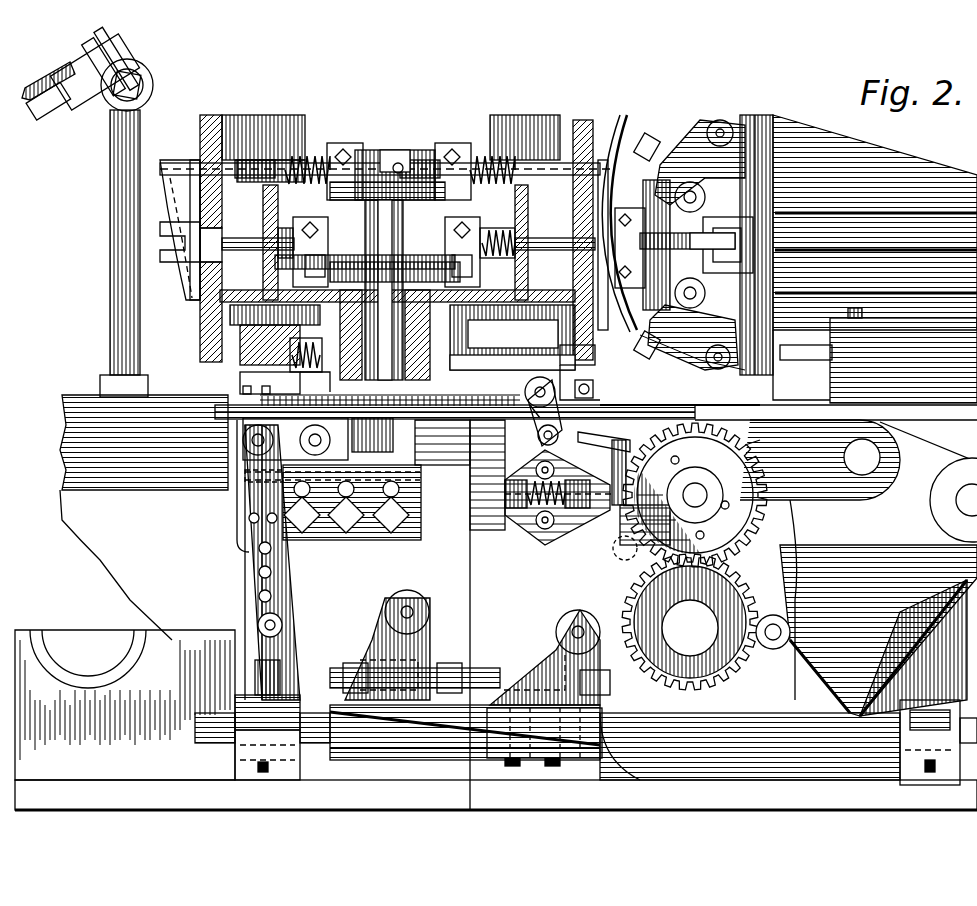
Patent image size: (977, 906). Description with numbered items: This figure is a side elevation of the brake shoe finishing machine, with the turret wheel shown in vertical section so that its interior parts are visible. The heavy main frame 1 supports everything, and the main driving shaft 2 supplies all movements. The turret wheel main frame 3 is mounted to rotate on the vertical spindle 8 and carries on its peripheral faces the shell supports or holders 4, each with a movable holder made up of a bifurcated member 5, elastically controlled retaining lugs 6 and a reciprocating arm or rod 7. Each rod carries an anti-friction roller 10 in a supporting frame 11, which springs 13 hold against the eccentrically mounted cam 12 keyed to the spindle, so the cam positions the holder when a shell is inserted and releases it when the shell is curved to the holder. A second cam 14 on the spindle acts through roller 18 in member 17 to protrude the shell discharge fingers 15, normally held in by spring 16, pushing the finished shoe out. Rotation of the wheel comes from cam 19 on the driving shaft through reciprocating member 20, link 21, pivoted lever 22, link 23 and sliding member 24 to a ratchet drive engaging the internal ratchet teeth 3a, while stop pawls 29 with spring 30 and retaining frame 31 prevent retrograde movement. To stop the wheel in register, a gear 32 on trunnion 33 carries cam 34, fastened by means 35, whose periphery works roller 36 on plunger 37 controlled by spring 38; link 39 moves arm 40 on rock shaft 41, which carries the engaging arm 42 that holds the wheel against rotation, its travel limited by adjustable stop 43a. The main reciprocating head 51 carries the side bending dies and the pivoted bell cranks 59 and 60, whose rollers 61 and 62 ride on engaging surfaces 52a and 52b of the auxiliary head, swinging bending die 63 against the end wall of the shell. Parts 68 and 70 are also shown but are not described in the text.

The main frame 1 is at (115, 470).
The main driving shaft 2 is at (703, 623).
The turret wheel main frame 3 is at (215, 115).
The internal ratchet teeth 3a is at (512, 337).
The shell support or holder 4 is at (190, 298).
The bifurcated member 5 is at (160, 230).
The elastically controlled retaining lugs 6 is at (200, 330).
The reciprocating arm or rod 7 is at (543, 228).
The vertical spindle 8 is at (313, 585).
The anti-friction rollers 10 is at (370, 262).
The supporting frames 11 is at (386, 252).
The eccentrically mounted cam 12 is at (405, 275).
The springs 13 is at (288, 238).
The eccentrically mounted cam 14 is at (372, 190).
The shell discharge fingers 15 is at (250, 168).
The spring 16 is at (312, 155).
The roller carrying member 17 is at (345, 143).
The anti-friction roller 18 is at (410, 182).
The eccentrically mounted cam 19 is at (640, 562).
The reciprocating member 20 is at (470, 725).
The link 21 is at (398, 598).
The pivoted lever 22 is at (258, 480).
The link 23 is at (245, 440).
The sliding member 24 is at (403, 435).
The stop pawl 29 is at (265, 348).
The spring 30 is at (305, 342).
The retaining frame 31 is at (255, 380).
The gear 32 is at (715, 470).
The trunnion 33 is at (858, 481).
The cam 34 is at (764, 436).
The securing means 35 is at (702, 538).
The anti-friction roller 36 is at (624, 548).
The plunger 37 is at (542, 522).
The spring 38 is at (505, 495).
The link 39 is at (618, 444).
The arm 40 is at (537, 420).
The rock shaft 41 is at (525, 392).
The engaging arm 42 is at (598, 358).
The adjustable stop 43a is at (690, 328).
The main reciprocating head 51 is at (922, 175).
The engaging surface 52a is at (752, 115).
The engaging surface 52b is at (700, 402).
The pivoted bell crank 59 is at (690, 150).
The pivoted bell crank 60 is at (693, 341).
The anti-friction roller 61 is at (725, 120).
The anti-friction roller 62 is at (717, 345).
The bending die 63 is at (645, 180).
The nut 68 is at (648, 150).
The box 70 is at (696, 248).